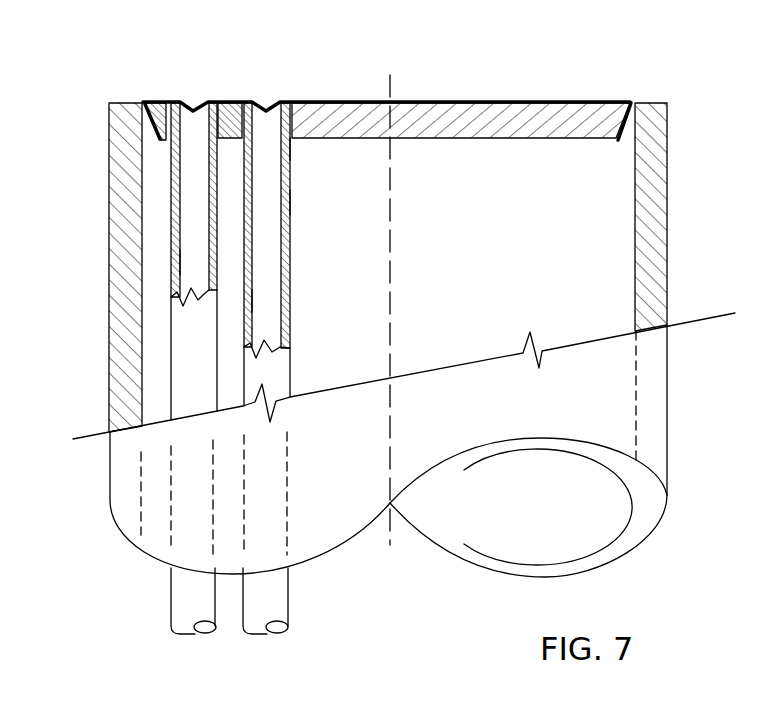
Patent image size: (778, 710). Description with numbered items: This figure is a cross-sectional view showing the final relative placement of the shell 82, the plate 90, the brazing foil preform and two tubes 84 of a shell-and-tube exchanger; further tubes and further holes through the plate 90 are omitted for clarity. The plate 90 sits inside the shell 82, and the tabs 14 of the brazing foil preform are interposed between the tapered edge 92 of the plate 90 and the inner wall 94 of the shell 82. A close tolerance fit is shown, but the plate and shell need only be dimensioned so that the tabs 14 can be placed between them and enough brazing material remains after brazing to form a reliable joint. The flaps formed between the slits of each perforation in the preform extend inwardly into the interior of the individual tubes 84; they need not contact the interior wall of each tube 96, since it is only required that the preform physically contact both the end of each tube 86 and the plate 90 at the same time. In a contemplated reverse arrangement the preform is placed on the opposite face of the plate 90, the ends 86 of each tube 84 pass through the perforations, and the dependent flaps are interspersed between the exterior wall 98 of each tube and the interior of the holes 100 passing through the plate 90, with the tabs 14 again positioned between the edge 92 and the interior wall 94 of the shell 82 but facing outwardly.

The tabs 14 is at (542, 95).
The shell 82 is at (678, 206).
The tubes 84 is at (298, 237).
The end of each tube 86 is at (180, 118).
The plate 90 is at (472, 132).
The tapered edge 92 is at (163, 113).
The inner wall 94 is at (150, 348).
The interior wall of each tube 96 is at (188, 262).
The exterior wall 98 is at (298, 202).
The holes 100 is at (299, 150).